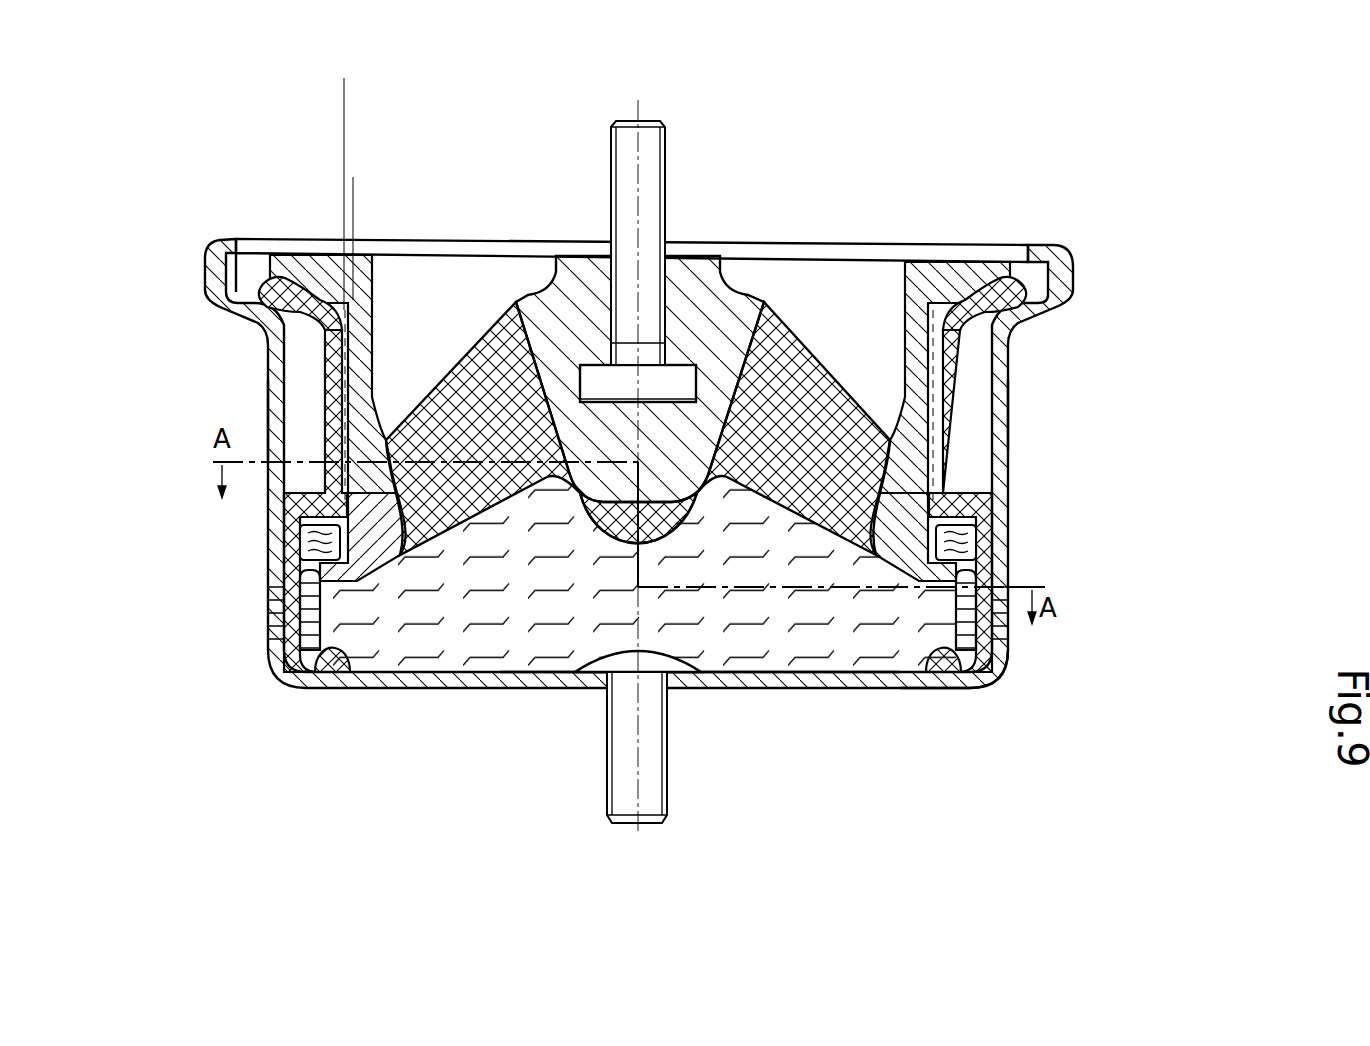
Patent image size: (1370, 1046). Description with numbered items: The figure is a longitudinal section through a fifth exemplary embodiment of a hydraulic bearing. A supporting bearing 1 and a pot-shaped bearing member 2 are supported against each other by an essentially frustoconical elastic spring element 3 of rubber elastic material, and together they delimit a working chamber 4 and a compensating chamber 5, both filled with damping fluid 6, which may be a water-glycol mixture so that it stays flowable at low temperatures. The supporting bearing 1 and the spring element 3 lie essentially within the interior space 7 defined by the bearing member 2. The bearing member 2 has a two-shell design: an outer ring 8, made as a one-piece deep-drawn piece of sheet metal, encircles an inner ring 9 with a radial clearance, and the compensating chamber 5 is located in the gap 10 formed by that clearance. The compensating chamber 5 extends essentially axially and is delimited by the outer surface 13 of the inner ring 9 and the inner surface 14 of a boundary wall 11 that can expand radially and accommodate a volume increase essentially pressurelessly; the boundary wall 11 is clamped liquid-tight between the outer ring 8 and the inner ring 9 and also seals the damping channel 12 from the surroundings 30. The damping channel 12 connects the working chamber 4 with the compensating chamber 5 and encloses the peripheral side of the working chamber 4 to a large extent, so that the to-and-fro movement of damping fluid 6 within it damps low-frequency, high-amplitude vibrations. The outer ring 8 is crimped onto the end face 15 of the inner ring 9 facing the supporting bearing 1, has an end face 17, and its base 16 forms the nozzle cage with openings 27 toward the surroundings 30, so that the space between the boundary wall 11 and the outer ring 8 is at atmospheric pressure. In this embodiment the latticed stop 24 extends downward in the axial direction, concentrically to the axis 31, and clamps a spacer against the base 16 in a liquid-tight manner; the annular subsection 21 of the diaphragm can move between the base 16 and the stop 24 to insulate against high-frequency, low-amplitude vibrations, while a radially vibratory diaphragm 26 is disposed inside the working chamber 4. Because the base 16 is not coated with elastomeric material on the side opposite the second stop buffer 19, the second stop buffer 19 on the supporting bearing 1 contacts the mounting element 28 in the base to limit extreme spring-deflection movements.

The supporting bearing 1 is at (685, 300).
The bearing member 2 is at (420, 680).
The elastic spring element 3 is at (792, 330).
The working chamber 4 is at (781, 613).
The compensating chamber 5 is at (937, 463).
The damping fluid 6 is at (548, 623).
The interior space 7 is at (878, 403).
The outer ring 8 is at (277, 428).
The inner ring 9 is at (378, 345).
The gap 10 is at (310, 443).
The boundary wall 11 is at (327, 417).
The damping channel 12 is at (947, 541).
The outer surface of inner ring 13 is at (353, 220).
The inner surface of boundary wall 14 is at (354, 112).
The end face of inner ring 15 is at (930, 277).
The base of outer ring 16 is at (723, 680).
The end face of outer ring 17 is at (932, 695).
The second stop buffer 19 is at (642, 530).
The annular subsection of diaphragm 21 is at (268, 652).
The latticed stop 24 is at (305, 683).
The radially vibratory diaphragm 26 is at (1008, 636).
The opening 27 is at (1008, 415).
The mounting element 28 is at (623, 795).
The surroundings 30 is at (1178, 471).
The axis 31 is at (643, 107).